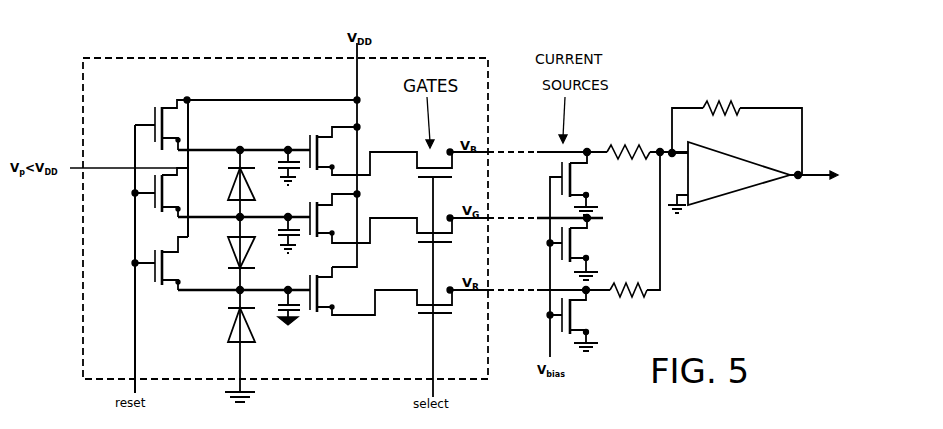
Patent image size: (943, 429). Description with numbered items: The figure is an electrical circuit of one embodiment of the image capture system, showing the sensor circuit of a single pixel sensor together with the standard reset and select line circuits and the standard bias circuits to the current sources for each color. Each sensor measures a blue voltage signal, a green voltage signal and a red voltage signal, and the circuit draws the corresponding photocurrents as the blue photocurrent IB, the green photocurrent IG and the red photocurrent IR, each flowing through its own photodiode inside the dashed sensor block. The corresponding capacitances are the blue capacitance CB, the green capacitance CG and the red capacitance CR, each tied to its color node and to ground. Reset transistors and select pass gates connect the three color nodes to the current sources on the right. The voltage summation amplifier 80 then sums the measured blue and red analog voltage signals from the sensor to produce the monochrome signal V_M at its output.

The voltage summation amplifier 80 is at (722, 185).
The blue capacitance CB is at (288, 157).
The green capacitance CG is at (288, 226).
The red capacitance CR is at (288, 297).
The blue photocurrent IB is at (215, 162).
The green photocurrent IG is at (215, 242).
The red photocurrent IR is at (215, 308).